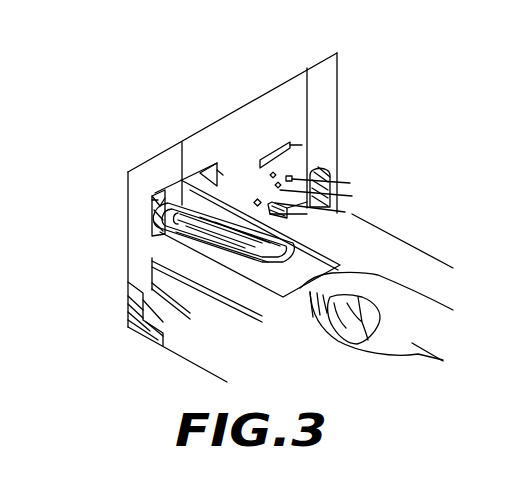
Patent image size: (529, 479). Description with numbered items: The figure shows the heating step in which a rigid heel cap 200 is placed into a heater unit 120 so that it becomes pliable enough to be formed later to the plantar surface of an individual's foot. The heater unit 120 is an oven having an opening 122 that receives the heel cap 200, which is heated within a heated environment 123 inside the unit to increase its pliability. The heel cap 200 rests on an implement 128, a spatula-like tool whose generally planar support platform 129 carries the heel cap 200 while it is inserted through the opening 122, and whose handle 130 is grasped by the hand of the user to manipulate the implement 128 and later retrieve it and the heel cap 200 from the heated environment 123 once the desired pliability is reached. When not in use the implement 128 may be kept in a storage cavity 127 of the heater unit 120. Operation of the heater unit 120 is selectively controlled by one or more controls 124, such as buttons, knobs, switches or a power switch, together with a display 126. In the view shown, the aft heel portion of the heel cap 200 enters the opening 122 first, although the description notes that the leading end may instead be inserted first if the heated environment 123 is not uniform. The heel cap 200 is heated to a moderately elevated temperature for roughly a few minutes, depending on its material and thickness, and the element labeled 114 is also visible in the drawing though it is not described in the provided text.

The plate 114 is at (375, 250).
The heater unit 120 is at (272, 107).
The opening 122 is at (204, 170).
The heated environment 123 is at (157, 212).
The controls 124 is at (342, 192).
The display 126 is at (302, 145).
The storage cavity 127 is at (156, 262).
The implement 128 is at (282, 311).
The support platform 129 is at (258, 266).
The handle 130 is at (362, 326).
The heel cap 200 is at (182, 142).